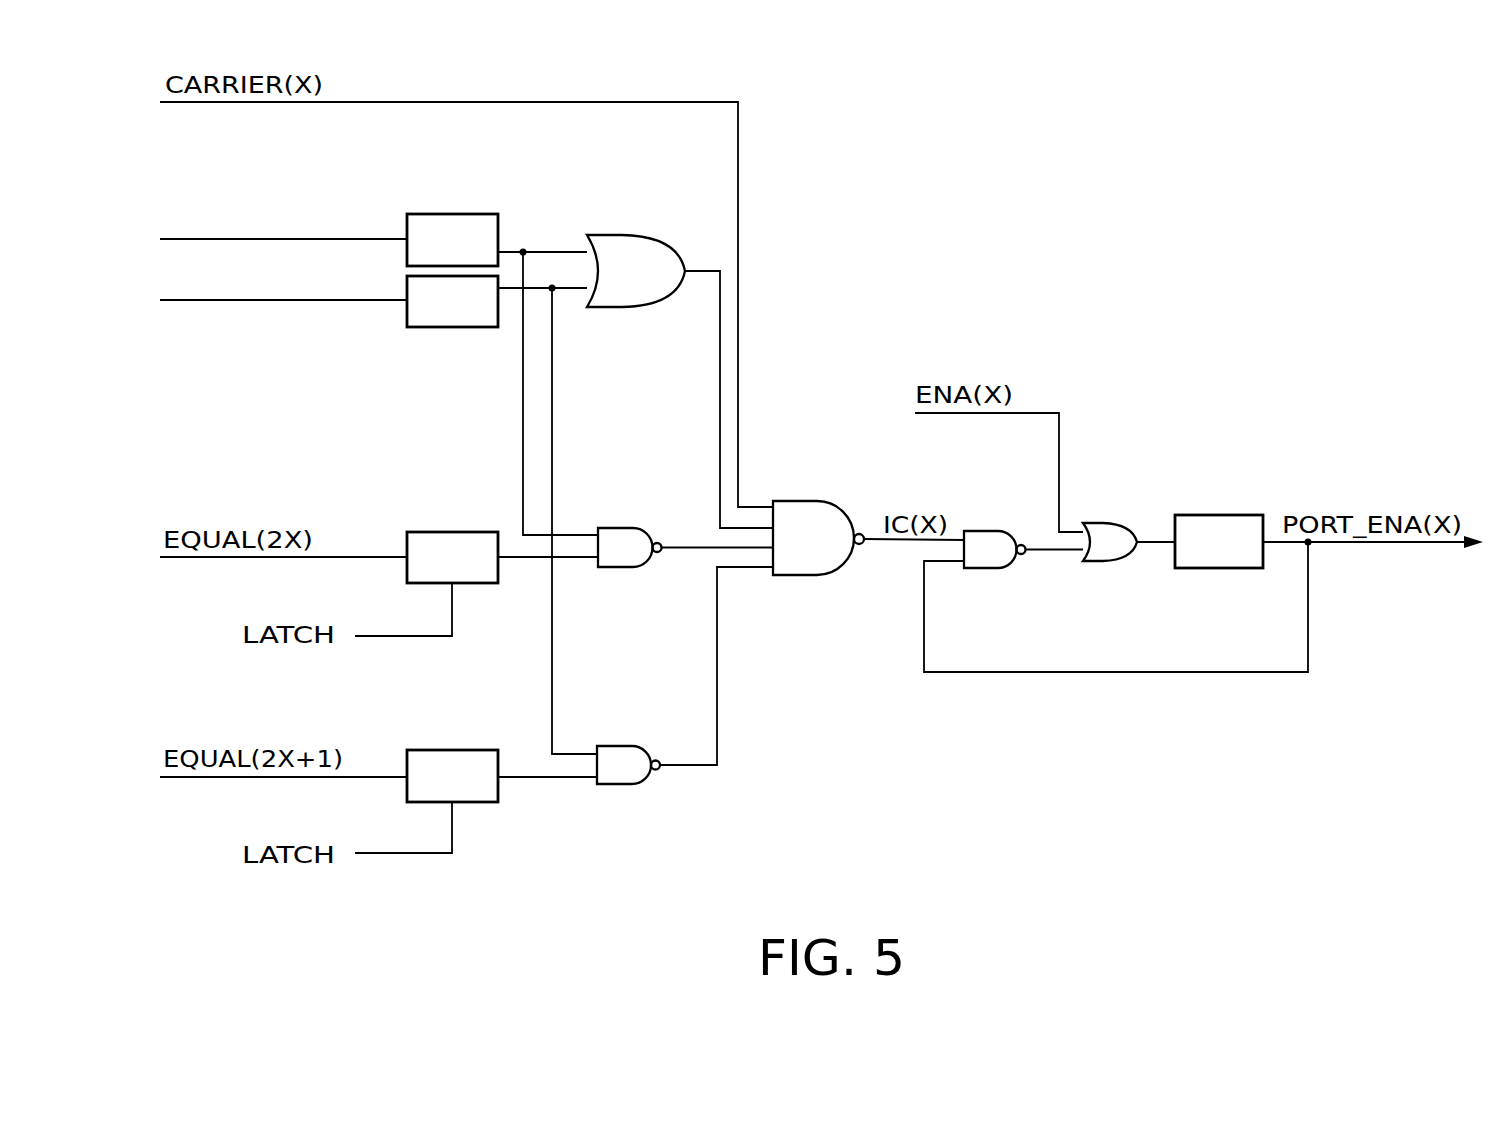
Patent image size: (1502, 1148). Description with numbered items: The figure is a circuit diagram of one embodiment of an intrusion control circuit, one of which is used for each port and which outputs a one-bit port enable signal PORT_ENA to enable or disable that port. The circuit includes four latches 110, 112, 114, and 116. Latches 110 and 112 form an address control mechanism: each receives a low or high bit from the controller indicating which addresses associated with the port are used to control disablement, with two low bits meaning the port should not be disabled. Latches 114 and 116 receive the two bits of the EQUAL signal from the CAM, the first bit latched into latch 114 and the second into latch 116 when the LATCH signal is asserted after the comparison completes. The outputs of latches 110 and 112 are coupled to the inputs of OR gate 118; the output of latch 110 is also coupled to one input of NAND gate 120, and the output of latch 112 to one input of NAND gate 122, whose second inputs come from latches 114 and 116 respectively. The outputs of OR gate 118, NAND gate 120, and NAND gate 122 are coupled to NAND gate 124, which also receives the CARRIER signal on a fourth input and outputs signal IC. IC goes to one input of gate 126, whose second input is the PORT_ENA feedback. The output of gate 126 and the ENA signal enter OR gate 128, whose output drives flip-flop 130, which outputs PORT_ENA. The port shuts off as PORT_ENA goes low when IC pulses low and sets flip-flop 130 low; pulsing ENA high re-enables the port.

The latch 110 is at (453, 214).
The latch 112 is at (453, 327).
The latch 114 is at (453, 532).
The latch 116 is at (453, 750).
The OR gate 118 is at (626, 235).
The NAND gate 120 is at (633, 528).
The NAND gate 122 is at (632, 746).
The NAND gate 124 is at (816, 501).
The AND gate 126 is at (998, 531).
The OR gate 128 is at (1106, 523).
The flip-flop 130 is at (1220, 515).